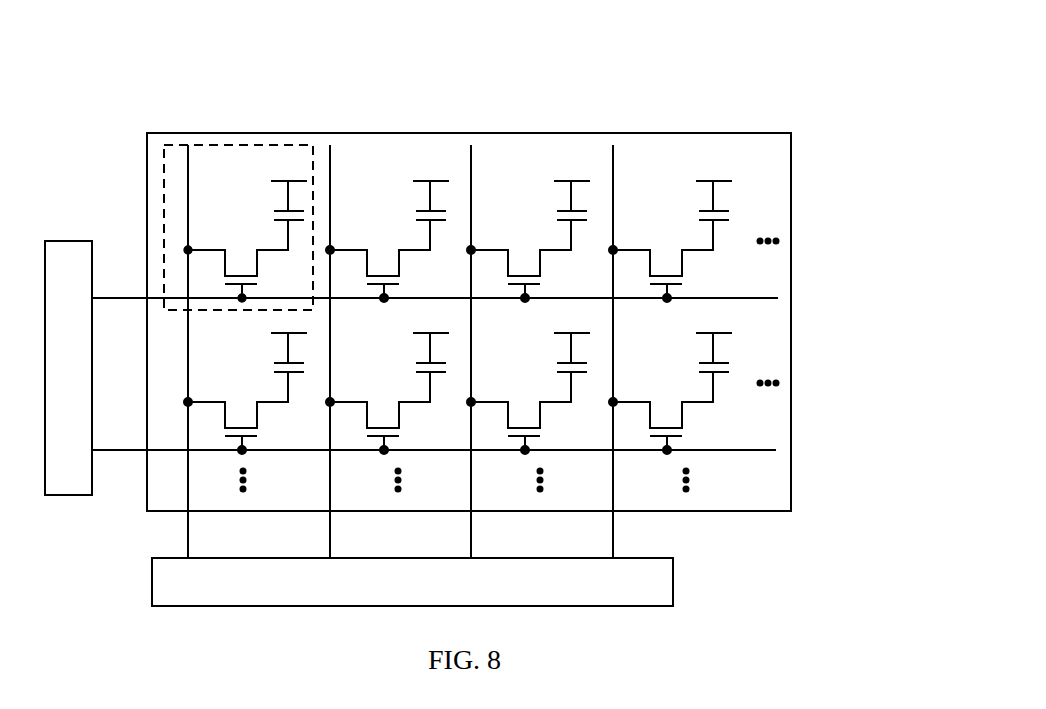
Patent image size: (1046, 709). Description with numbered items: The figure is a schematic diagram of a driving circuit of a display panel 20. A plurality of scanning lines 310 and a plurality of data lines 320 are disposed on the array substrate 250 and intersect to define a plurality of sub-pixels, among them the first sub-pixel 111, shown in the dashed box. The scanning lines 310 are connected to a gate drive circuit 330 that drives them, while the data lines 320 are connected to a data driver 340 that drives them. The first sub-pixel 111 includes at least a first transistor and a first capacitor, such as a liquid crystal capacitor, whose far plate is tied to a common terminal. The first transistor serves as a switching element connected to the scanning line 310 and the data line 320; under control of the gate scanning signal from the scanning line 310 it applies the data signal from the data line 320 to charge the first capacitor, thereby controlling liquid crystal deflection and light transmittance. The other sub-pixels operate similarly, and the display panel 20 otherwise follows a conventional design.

The display panel 20 is at (867, 46).
The first sub-pixel 111 is at (241, 145).
The array substrate 250 is at (791, 322).
The scanning line 310 is at (118, 298).
The data line 320 is at (613, 534).
The gate drive circuit 330 is at (68, 368).
The data driver 340 is at (412, 582).